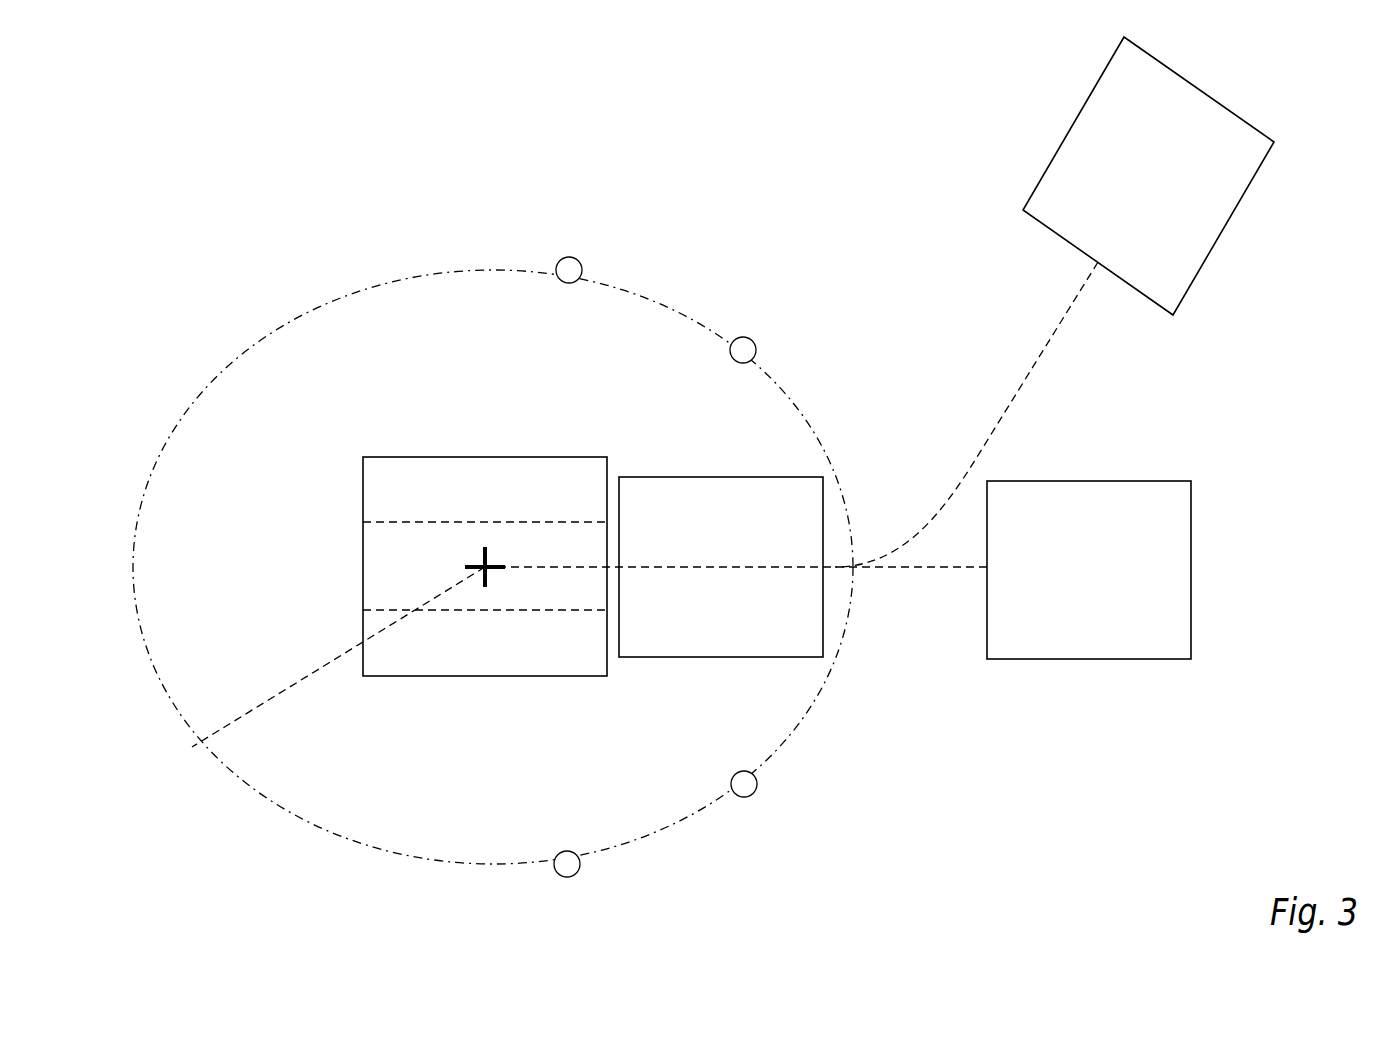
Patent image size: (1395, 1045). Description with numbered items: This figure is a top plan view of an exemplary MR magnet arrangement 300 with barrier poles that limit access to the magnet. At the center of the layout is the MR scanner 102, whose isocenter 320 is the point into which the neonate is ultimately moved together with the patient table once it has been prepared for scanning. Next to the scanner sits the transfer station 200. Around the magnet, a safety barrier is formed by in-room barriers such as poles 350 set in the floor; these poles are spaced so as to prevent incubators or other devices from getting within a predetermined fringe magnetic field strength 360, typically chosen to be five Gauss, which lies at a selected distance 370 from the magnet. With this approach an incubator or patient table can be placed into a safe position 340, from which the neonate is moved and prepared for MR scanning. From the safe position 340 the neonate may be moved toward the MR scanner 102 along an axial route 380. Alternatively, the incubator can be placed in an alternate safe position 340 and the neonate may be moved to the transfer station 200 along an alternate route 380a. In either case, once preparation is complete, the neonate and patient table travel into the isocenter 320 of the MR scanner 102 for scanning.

The measurement arrangement 300 is at (778, 98).
The MR scanner 102 is at (503, 457).
The transfer station 200 is at (800, 475).
The isocenter 320 is at (485, 565).
The safe position 340 is at (1258, 130).
The poles 350 is at (575, 255).
The fringe magnetic field strength 360 is at (342, 837).
The selected distance 370 is at (278, 697).
The axial route 380 is at (902, 568).
The alternate route 380a is at (1042, 352).